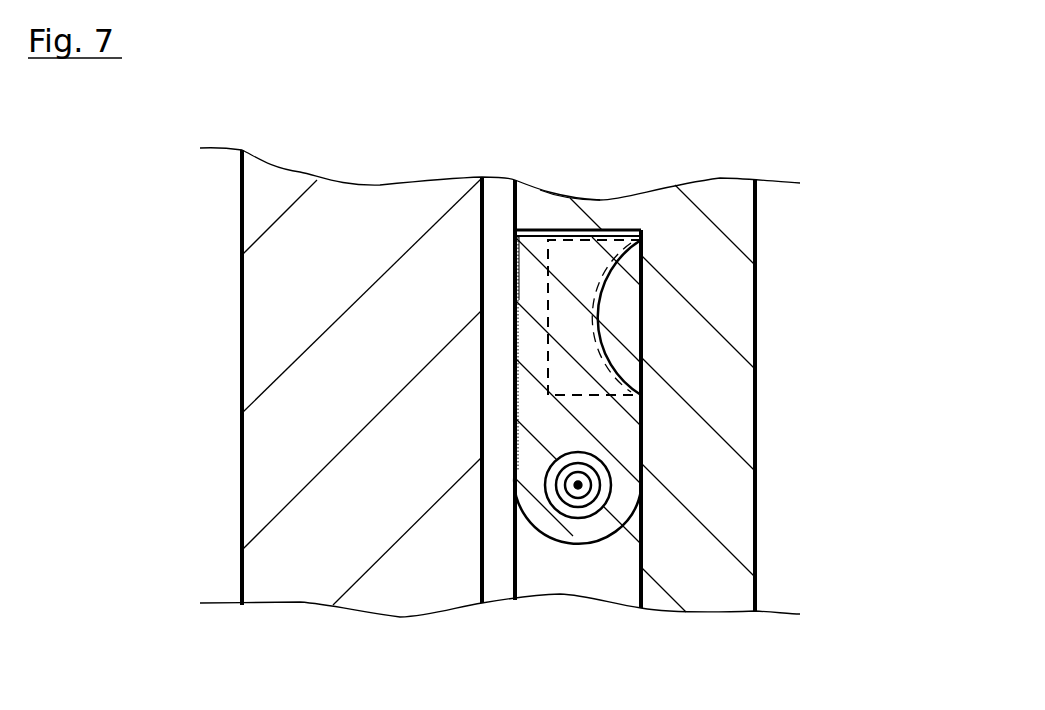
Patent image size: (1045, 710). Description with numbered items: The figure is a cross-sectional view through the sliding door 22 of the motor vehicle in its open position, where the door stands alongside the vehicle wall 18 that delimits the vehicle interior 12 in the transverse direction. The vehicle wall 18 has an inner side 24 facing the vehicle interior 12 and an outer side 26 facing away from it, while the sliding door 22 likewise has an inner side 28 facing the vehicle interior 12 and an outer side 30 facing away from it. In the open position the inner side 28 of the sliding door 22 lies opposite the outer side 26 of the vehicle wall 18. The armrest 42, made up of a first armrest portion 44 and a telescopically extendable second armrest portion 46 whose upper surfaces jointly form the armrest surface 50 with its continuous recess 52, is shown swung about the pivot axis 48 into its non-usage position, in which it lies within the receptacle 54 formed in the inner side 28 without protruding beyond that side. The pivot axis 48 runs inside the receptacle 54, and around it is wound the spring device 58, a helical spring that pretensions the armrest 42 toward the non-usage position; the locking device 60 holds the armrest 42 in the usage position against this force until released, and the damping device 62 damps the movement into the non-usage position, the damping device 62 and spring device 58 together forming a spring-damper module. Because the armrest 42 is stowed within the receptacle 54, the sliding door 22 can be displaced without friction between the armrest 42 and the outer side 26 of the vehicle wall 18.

The vehicle interior 12 is at (100, 448).
The vehicle wall 18 is at (325, 279).
The sliding door 22 is at (722, 282).
The inner side 24 is at (242, 378).
The outer side 26 is at (486, 583).
The inner side 28 is at (512, 192).
The outer side 30 is at (756, 330).
The armrest 42 is at (558, 556).
The first armrest portion 44 is at (528, 288).
The second armrest portion 46 is at (577, 228).
The pivot axis 48 is at (600, 460).
The armrest surface 50 is at (642, 442).
The recess 52 is at (641, 315).
The receptacle 54 is at (600, 232).
The spring device 58 is at (582, 484).
The locking device 60 is at (607, 502).
The damping device 62 is at (597, 489).